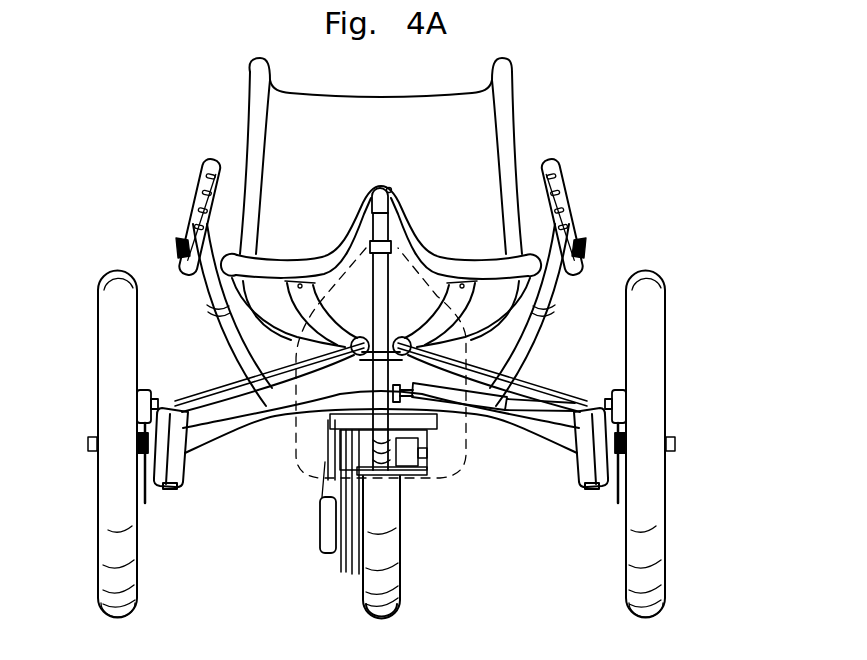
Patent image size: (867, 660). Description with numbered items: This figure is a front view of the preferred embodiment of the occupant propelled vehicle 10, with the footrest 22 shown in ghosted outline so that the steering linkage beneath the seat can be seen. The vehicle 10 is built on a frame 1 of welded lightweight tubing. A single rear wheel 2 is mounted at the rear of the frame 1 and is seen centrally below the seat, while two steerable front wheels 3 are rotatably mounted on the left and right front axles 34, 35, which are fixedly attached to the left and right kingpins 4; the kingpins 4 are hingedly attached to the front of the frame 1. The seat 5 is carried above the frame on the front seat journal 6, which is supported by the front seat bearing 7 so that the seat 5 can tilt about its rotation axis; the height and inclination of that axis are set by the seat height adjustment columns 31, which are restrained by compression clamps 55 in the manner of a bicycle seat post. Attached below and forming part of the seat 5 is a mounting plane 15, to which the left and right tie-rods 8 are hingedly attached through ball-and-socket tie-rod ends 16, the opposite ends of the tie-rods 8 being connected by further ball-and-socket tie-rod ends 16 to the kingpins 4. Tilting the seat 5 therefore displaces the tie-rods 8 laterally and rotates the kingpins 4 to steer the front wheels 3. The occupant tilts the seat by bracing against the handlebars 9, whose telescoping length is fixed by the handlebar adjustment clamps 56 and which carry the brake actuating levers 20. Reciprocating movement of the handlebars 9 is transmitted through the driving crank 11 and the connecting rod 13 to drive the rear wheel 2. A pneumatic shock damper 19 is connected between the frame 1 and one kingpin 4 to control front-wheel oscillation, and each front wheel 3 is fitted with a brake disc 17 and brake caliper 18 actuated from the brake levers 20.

The frame 1 is at (227, 433).
The rear wheel 2 is at (390, 577).
The front wheels 3 is at (105, 575).
The kingpins 4 is at (153, 450).
The seat 5 is at (513, 122).
The front seat journal 6 is at (391, 187).
The front seat bearing 7 is at (390, 192).
The tie-rods 8 is at (298, 362).
The handlebars 9 is at (193, 193).
The vehicle 10 is at (680, 177).
The driving crank 11 is at (332, 470).
The connecting rod 13 is at (323, 528).
The mounting plane 15 is at (316, 318).
The ball-and-socket tie-rod ends 16 is at (397, 343).
The brake disc 17 is at (146, 501).
The brake caliper 18 is at (152, 393).
The pneumatic shock damper 19 is at (483, 410).
The brake actuating lever 20 is at (180, 234).
The footrest 22 is at (433, 487).
The seat height adjustment columns 31 is at (387, 232).
The left front axle 34 is at (678, 442).
The right front axle 35 is at (88, 442).
The compression clamps 55 is at (393, 250).
The handlebar adjustment clamps 56 is at (212, 318).